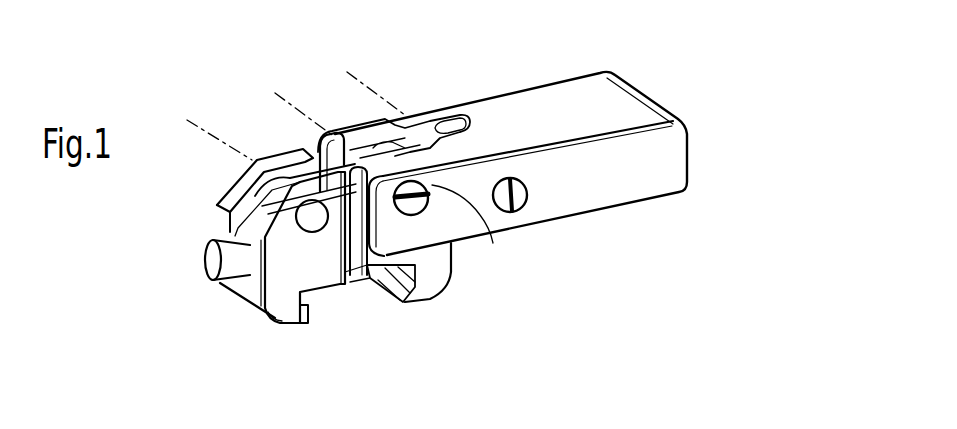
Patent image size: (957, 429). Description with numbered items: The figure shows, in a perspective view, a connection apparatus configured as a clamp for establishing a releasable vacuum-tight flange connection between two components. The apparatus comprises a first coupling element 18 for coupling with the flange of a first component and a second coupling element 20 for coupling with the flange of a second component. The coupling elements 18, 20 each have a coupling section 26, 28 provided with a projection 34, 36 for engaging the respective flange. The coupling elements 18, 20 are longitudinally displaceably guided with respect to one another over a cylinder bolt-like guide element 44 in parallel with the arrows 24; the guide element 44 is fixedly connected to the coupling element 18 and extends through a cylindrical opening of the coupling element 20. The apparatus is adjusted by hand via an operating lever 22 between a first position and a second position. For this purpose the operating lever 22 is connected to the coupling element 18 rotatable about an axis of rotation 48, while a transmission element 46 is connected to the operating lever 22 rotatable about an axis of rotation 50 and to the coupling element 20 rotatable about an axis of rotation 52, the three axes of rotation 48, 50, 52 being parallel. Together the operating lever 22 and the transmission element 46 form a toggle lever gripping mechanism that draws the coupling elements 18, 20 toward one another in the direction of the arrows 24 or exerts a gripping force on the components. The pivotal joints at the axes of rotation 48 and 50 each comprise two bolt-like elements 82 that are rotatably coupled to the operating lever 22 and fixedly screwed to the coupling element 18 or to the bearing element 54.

The first coupling element 18 is at (437, 264).
The second coupling element 20 is at (250, 285).
The operating lever 22 is at (570, 93).
The arrows 24 is at (310, 348).
The coupling section 26 is at (425, 280).
The coupling section 28 is at (280, 308).
The projection 34 is at (403, 302).
The projection 36 is at (310, 322).
The guide element 44 is at (217, 268).
The transmission element 46 is at (343, 192).
The axis of rotation 48 is at (470, 237).
The axis of rotation 50 is at (528, 208).
The axis of rotation 52 is at (196, 124).
The bearing element 54 is at (445, 130).
The bolt-like elements 82 is at (428, 203).